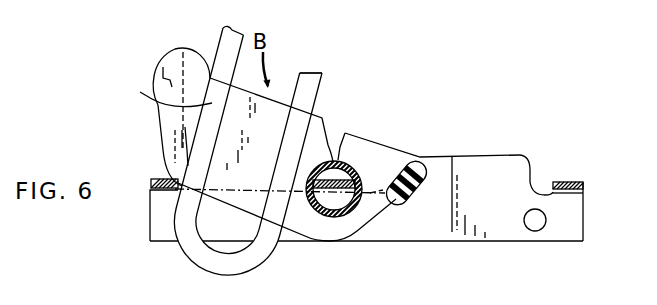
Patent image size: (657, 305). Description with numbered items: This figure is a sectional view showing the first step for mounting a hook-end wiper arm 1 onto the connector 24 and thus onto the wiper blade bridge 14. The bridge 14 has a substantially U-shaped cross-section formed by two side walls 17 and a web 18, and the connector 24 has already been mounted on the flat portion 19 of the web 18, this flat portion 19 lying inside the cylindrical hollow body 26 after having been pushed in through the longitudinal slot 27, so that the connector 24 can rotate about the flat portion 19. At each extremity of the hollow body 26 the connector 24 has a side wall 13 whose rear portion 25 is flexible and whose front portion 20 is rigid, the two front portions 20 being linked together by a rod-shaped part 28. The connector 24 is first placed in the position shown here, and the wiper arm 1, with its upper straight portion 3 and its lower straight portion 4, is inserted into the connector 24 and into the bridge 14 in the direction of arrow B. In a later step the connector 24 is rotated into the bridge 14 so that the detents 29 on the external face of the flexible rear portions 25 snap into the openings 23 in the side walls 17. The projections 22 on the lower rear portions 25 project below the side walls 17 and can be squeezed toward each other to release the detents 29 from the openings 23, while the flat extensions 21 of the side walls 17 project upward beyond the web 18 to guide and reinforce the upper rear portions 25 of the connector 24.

The hook-end wiper arm 1 is at (186, 255).
The upper straight portion 3 is at (167, 77).
The lower straight portion 4 is at (308, 73).
The side walls 13 is at (273, 107).
The wiper blade bridge 14 is at (452, 244).
The side walls 17 is at (153, 212).
The web 18 is at (156, 179).
The flat portion 19 is at (333, 185).
The front portions 20 is at (398, 157).
The flat extensions 21 is at (522, 157).
The projections 22 is at (184, 50).
The openings 23 is at (538, 224).
The connector 24 is at (326, 121).
The rear portions 25 is at (178, 127).
The cylindrical hollow body 26 is at (390, 152).
The longitudinal slot 27 is at (338, 137).
The rod-shaped part 28 is at (425, 176).
The detents 29 is at (162, 63).